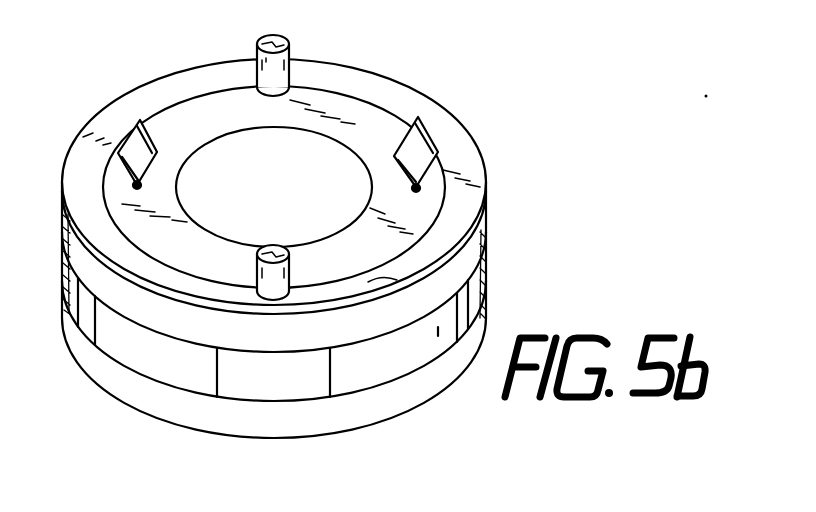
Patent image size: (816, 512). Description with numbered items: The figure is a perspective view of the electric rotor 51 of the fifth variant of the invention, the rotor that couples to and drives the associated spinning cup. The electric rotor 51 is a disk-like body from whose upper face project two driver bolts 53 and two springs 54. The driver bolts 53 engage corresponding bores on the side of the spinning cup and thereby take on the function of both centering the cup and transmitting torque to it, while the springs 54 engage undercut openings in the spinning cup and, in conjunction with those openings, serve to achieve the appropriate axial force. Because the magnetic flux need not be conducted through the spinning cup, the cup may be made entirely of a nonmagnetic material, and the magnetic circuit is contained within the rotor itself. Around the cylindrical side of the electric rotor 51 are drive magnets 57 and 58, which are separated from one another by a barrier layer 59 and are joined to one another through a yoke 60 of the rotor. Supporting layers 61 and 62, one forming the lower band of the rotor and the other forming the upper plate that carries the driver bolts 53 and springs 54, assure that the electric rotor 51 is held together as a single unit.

The electric rotor 51 is at (500, 246).
The driver bolt 53 is at (291, 41).
The spring 54 is at (139, 118).
The drive magnet 57 is at (347, 382).
The drive magnet 58 is at (164, 367).
The barrier layer 59 is at (247, 388).
The yoke 60 is at (387, 317).
The supporting layer 61 is at (312, 428).
The supporting layer 62 is at (460, 198).